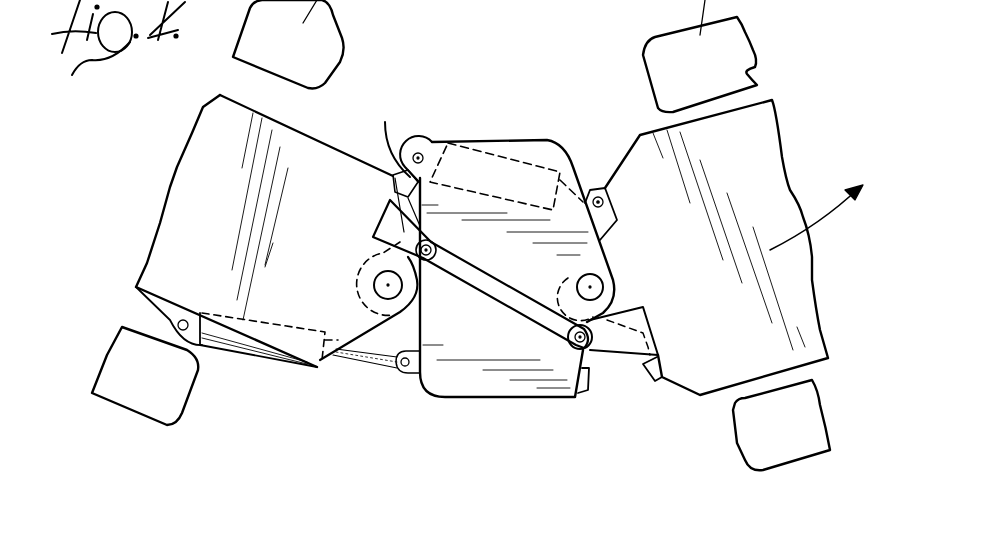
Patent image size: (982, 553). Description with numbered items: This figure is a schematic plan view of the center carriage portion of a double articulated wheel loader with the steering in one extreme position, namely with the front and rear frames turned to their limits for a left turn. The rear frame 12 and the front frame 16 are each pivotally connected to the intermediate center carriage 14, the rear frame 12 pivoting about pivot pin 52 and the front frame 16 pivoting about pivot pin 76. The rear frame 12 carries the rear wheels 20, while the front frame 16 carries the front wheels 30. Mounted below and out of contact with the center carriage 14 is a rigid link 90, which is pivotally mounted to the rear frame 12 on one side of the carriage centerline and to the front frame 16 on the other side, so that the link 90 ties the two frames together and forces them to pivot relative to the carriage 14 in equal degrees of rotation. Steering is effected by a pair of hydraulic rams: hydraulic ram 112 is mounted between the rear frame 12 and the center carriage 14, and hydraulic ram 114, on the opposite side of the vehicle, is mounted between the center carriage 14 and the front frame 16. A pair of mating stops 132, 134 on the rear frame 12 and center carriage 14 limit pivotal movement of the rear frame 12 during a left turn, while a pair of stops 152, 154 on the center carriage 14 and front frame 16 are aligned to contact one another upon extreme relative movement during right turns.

The rear frame 12 is at (193, 192).
The center carriage 14 is at (478, 385).
The front frame 16 is at (757, 160).
The wheels 20 is at (118, 392).
The front wheels 30 is at (798, 448).
The pivot pin 52 is at (378, 283).
The pivot pin 76 is at (597, 283).
The rigid link 90 is at (525, 310).
The hydraulic ram 112 is at (238, 348).
The hydraulic ram 114 is at (507, 170).
The stop 132 is at (395, 187).
The stop 134 is at (375, 138).
The stop 152 is at (578, 395).
The stop 154 is at (652, 383).